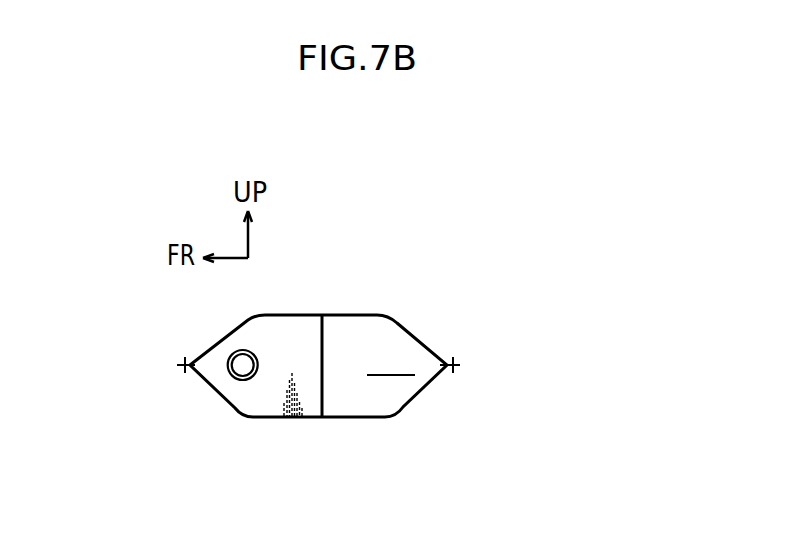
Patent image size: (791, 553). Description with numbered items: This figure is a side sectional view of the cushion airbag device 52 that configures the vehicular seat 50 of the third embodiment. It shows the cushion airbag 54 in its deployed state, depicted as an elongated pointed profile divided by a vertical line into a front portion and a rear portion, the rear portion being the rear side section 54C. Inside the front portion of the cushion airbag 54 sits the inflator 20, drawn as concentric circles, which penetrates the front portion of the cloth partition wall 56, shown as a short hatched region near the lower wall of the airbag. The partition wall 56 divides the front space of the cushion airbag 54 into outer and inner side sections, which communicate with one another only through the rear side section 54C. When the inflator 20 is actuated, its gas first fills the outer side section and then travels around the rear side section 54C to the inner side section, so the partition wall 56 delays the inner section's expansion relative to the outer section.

The vehicular seat 50 is at (364, 257).
The cushion airbag device 52 is at (440, 223).
The cushion airbag 54 is at (304, 313).
The rear side section 54C is at (391, 363).
The inflator 20 is at (243, 366).
The partition wall 56 is at (264, 388).